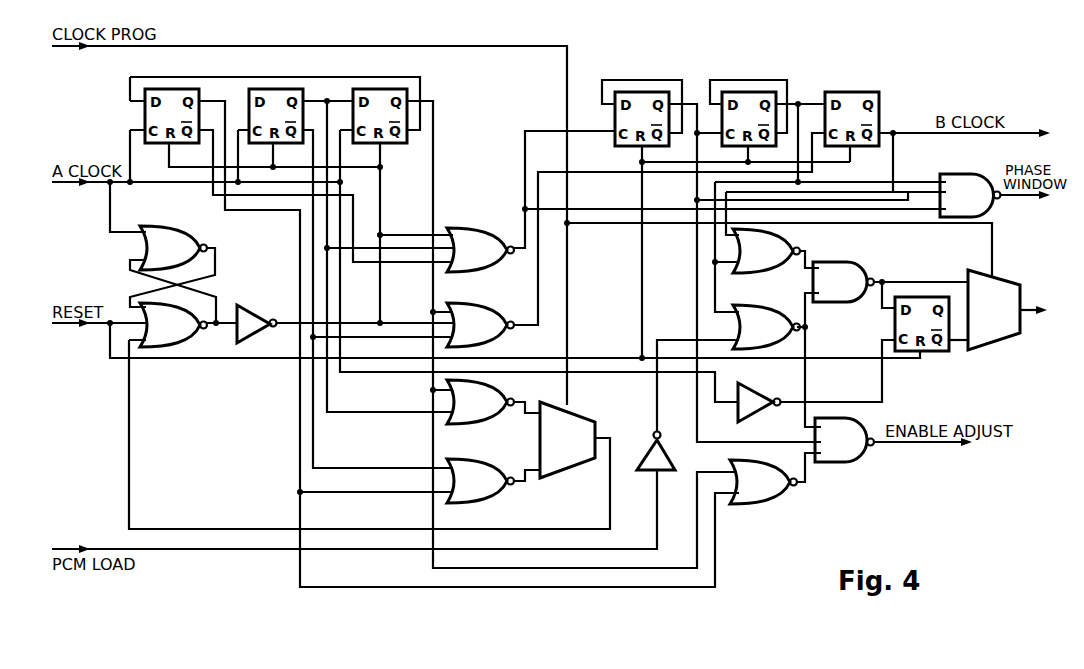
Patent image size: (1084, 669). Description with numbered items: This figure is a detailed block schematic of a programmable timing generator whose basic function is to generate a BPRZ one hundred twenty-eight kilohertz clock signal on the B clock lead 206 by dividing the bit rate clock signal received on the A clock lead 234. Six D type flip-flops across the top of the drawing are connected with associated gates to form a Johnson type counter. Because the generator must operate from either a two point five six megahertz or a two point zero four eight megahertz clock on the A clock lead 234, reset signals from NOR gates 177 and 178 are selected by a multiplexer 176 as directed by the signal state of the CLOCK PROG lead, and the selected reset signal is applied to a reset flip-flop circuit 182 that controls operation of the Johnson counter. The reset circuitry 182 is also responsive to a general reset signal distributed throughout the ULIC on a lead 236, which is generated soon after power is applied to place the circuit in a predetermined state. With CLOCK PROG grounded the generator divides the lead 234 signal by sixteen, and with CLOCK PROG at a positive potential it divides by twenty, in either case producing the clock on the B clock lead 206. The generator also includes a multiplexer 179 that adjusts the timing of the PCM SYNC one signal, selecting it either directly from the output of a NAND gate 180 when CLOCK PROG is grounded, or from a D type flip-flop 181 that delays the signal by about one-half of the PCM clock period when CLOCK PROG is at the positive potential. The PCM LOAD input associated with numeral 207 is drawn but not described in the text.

The A clock lead 234 is at (57, 187).
The reset lead 236 is at (60, 328).
The PCM load input 207 is at (212, 552).
The B clock lead 206 is at (903, 130).
The reset flip-flop circuit 182 is at (214, 284).
The NOR gate 177 is at (463, 424).
The NOR gate 178 is at (487, 504).
The multiplexer 176 is at (555, 479).
The NAND gate 180 is at (850, 263).
The D type flip-flop 181 is at (893, 328).
The multiplexer 179 is at (1003, 278).